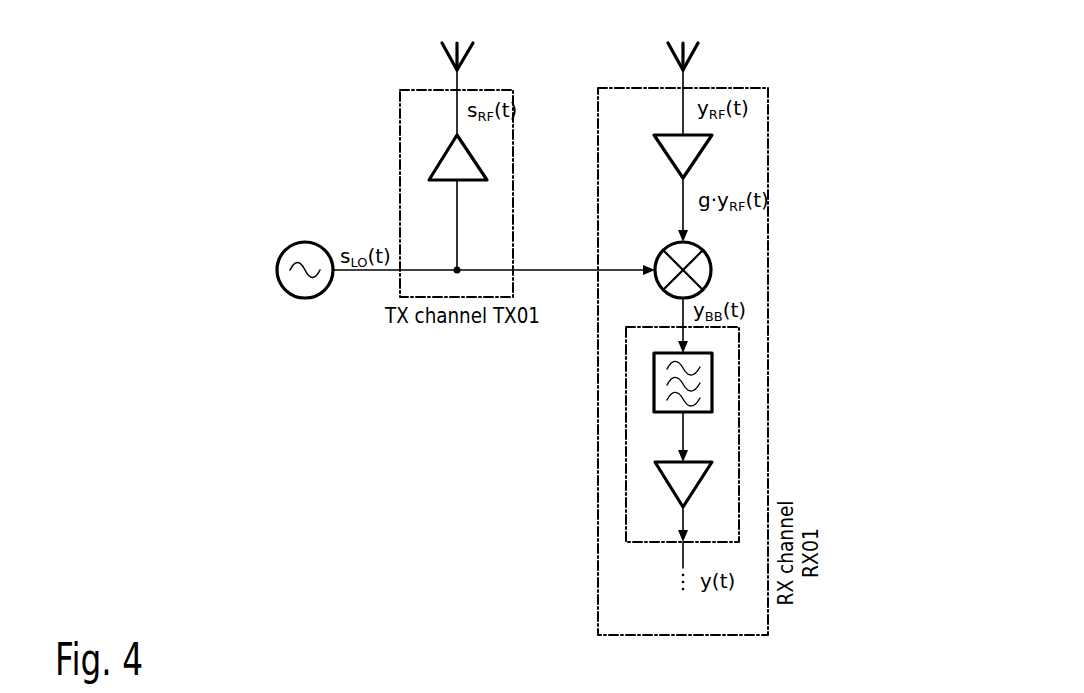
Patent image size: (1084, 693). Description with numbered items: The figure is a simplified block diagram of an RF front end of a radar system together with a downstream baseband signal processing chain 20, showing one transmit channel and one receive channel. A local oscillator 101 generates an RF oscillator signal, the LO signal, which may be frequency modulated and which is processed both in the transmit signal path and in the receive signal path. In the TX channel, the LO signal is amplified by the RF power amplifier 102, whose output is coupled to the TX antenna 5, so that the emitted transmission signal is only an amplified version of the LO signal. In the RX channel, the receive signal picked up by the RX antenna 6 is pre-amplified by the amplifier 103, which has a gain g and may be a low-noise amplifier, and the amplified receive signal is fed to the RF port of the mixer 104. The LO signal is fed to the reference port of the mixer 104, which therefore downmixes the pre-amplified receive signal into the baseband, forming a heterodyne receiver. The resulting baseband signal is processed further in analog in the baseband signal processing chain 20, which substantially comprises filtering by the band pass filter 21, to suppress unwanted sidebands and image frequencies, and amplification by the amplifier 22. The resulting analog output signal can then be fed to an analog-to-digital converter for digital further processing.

The TX antenna 5 is at (445, 63).
The RX antenna 6 is at (700, 52).
The baseband signal processing chain 20 is at (627, 527).
The band pass filter 21 is at (655, 387).
The amplifier 22 is at (666, 484).
The local oscillator 101 is at (281, 283).
The RF power amplifier 102 is at (437, 166).
The amplifier 103 is at (700, 150).
The mixer 104 is at (711, 262).